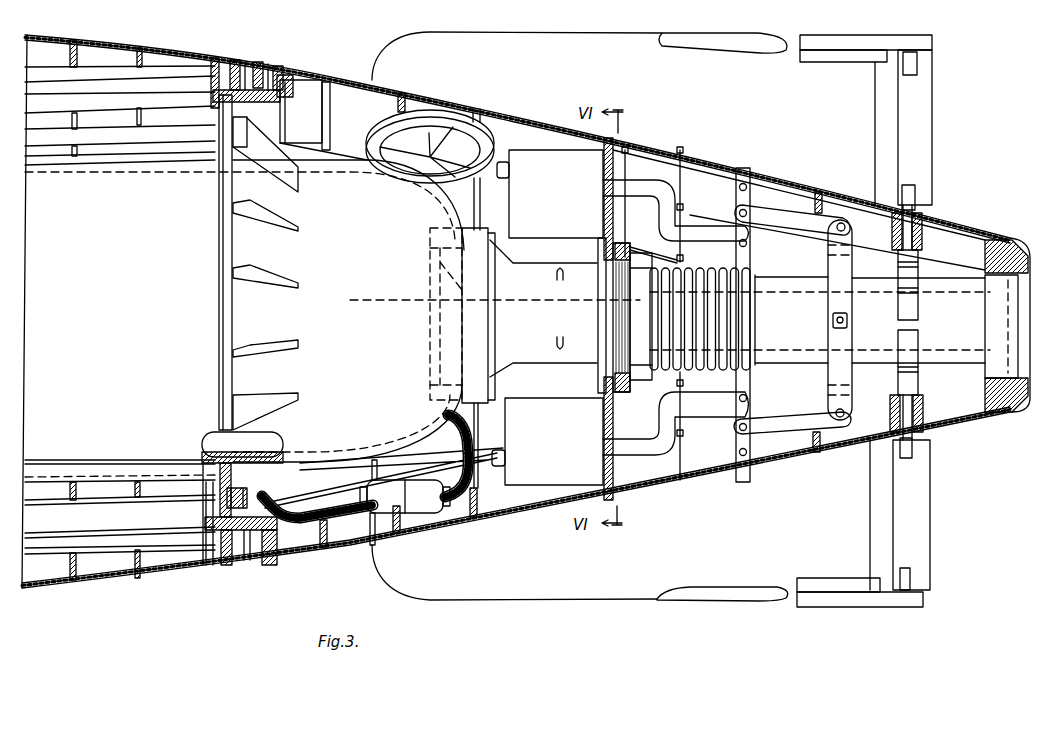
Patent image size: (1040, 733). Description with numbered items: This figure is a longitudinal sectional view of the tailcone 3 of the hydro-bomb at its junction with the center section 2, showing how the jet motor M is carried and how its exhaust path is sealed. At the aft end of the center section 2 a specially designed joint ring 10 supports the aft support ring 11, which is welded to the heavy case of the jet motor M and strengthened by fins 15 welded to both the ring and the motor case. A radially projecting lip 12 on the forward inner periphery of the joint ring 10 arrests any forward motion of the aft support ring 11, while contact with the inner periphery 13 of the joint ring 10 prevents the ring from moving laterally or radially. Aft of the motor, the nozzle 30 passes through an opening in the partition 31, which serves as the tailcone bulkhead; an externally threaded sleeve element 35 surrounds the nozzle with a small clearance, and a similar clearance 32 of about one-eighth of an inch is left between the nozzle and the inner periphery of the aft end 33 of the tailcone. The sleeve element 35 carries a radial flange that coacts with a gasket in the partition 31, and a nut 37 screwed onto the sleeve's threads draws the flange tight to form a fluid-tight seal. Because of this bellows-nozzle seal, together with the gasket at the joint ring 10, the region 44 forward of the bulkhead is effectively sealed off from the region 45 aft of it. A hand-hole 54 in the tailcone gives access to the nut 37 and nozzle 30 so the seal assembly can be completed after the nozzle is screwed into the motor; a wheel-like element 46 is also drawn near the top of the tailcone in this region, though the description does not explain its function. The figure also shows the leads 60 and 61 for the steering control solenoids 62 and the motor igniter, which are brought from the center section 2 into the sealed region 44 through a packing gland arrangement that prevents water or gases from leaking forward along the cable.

The center section 2 is at (104, 36).
The tailcone 3 is at (316, 80).
The joint ring 10 is at (237, 62).
The aft support ring 11 is at (236, 252).
The radially projecting lip 12 is at (225, 505).
The inner periphery 13 is at (218, 533).
The fins 15 is at (275, 348).
The nozzle 30 is at (768, 277).
The partition 31 is at (603, 145).
The clearance 32 is at (985, 285).
The aft end 33 is at (1011, 243).
The externally threaded sleeve element 35 is at (598, 258).
The nut 37 is at (624, 250).
The region 44 is at (566, 391).
The region 45 is at (790, 400).
The hand wheel 46 is at (485, 132).
The hand-hole 54 is at (652, 158).
The lead 60 is at (365, 466).
The lead 61 is at (482, 463).
The steering control solenoids 62 is at (566, 186).
The jet motor M is at (185, 227).